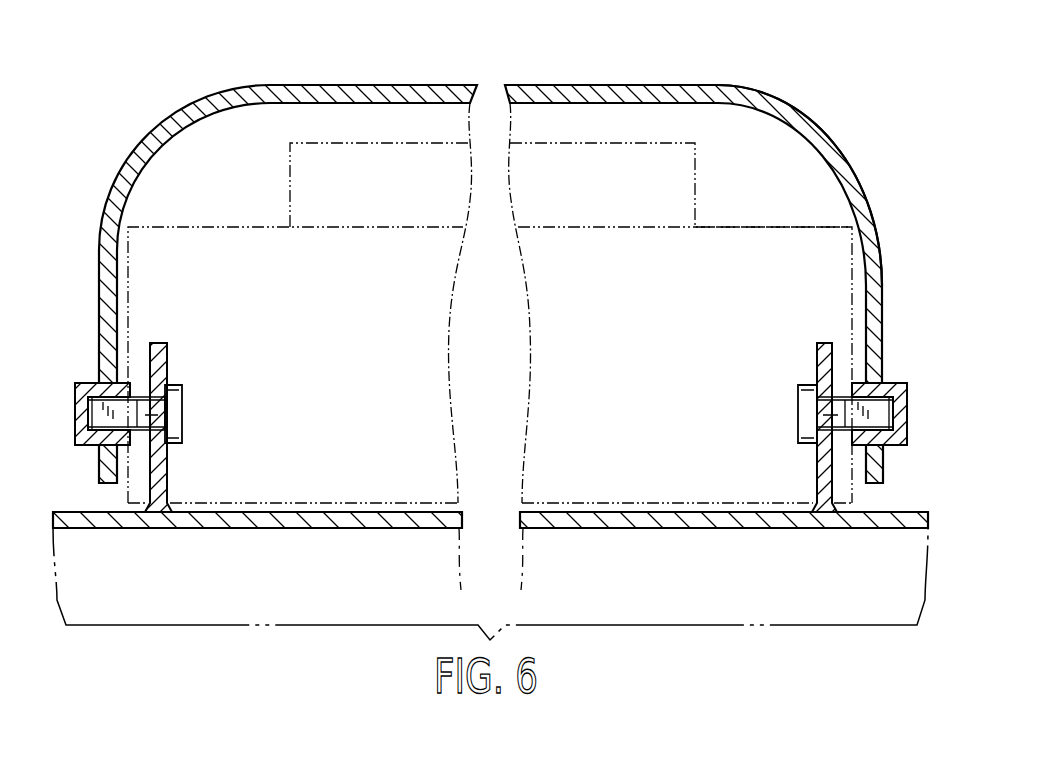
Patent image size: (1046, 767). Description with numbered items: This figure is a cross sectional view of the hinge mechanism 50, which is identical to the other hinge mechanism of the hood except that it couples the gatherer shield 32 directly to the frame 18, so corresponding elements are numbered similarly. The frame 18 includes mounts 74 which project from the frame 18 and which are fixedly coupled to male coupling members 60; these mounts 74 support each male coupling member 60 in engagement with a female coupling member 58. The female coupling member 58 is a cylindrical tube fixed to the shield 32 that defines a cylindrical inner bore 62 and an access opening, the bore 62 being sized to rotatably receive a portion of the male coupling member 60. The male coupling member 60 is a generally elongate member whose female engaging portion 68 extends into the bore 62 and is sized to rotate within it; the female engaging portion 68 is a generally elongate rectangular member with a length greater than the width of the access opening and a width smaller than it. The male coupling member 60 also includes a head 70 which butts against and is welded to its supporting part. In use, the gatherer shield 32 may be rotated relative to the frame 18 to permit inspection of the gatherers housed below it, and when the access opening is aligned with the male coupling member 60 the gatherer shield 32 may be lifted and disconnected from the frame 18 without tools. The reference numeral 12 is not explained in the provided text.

The vehicle body shell 12 is at (833, 98).
The frame 18 is at (676, 512).
The gatherer shield 32 is at (866, 185).
The hinge mechanism 50 is at (63, 388).
The female coupling member 58 is at (95, 383).
The male coupling member 60 is at (187, 405).
The bore 62 is at (99, 450).
The female engaging portion 68 is at (86, 413).
The head 70 is at (185, 428).
The mounts 74 is at (172, 471).